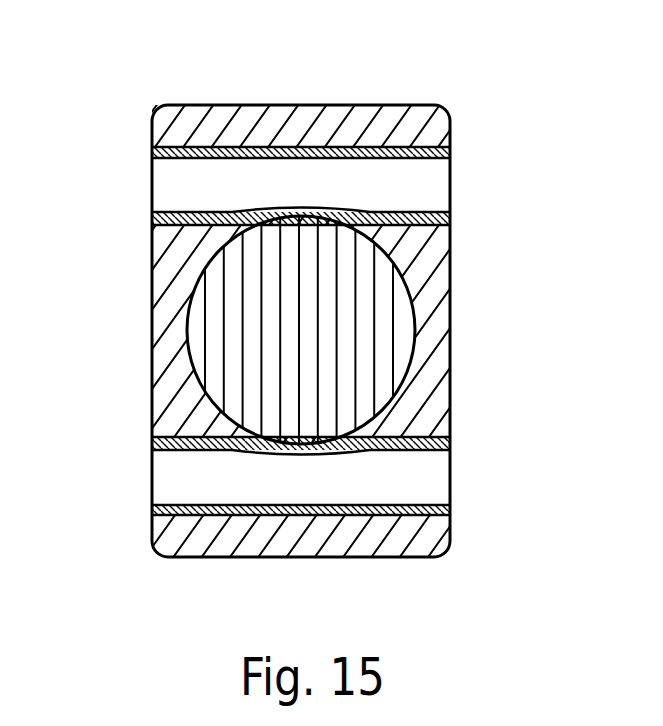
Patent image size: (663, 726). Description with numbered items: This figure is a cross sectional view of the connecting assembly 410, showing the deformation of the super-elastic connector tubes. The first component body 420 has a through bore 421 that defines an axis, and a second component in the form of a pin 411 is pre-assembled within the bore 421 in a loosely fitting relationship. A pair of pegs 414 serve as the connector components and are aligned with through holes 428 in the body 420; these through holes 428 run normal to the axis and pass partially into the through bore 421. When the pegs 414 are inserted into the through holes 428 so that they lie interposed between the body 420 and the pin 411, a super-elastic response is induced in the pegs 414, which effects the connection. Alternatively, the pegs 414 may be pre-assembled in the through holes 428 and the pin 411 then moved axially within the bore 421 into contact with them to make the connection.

The connecting assembly 410 is at (113, 66).
The pin 411 is at (222, 296).
The pegs 414 is at (153, 180).
The first component body 420 is at (427, 545).
The through bore 421 is at (399, 283).
The through holes 428 is at (428, 145).